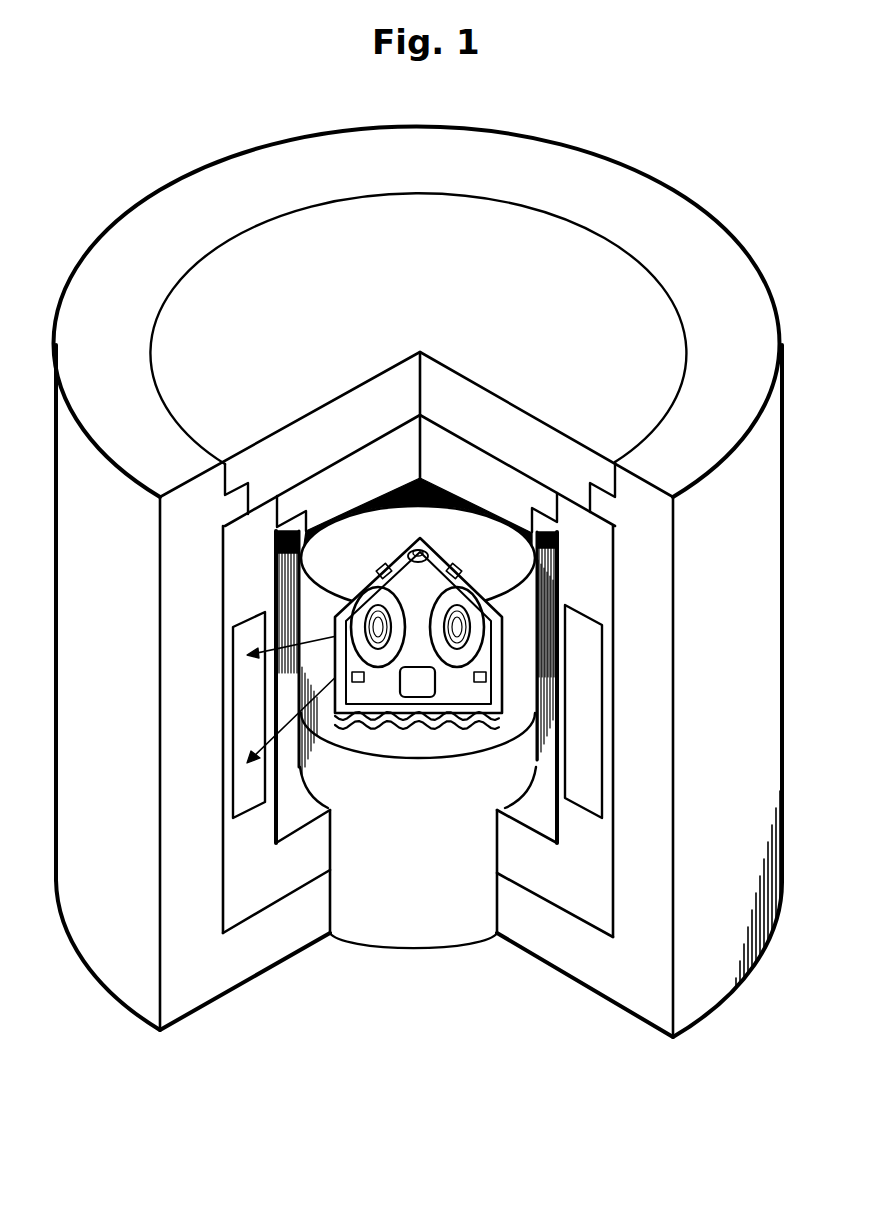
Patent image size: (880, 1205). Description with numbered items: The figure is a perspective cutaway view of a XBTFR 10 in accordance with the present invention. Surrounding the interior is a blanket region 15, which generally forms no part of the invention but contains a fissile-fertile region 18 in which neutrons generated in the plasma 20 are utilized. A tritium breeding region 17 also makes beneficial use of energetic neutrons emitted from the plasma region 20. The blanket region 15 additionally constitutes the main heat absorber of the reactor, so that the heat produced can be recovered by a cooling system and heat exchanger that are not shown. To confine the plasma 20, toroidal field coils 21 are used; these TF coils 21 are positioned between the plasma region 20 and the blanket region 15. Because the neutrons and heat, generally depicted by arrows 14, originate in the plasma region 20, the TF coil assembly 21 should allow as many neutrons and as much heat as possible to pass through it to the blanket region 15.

The XBTFR 10 is at (637, 162).
The arrows 14 is at (288, 727).
The blanket region 15 is at (233, 903).
The tritium breeding region 17 is at (252, 787).
The fissile-fertile region 18 is at (587, 795).
The plasma 20 is at (400, 663).
The toroidal field coils 21 is at (467, 660).